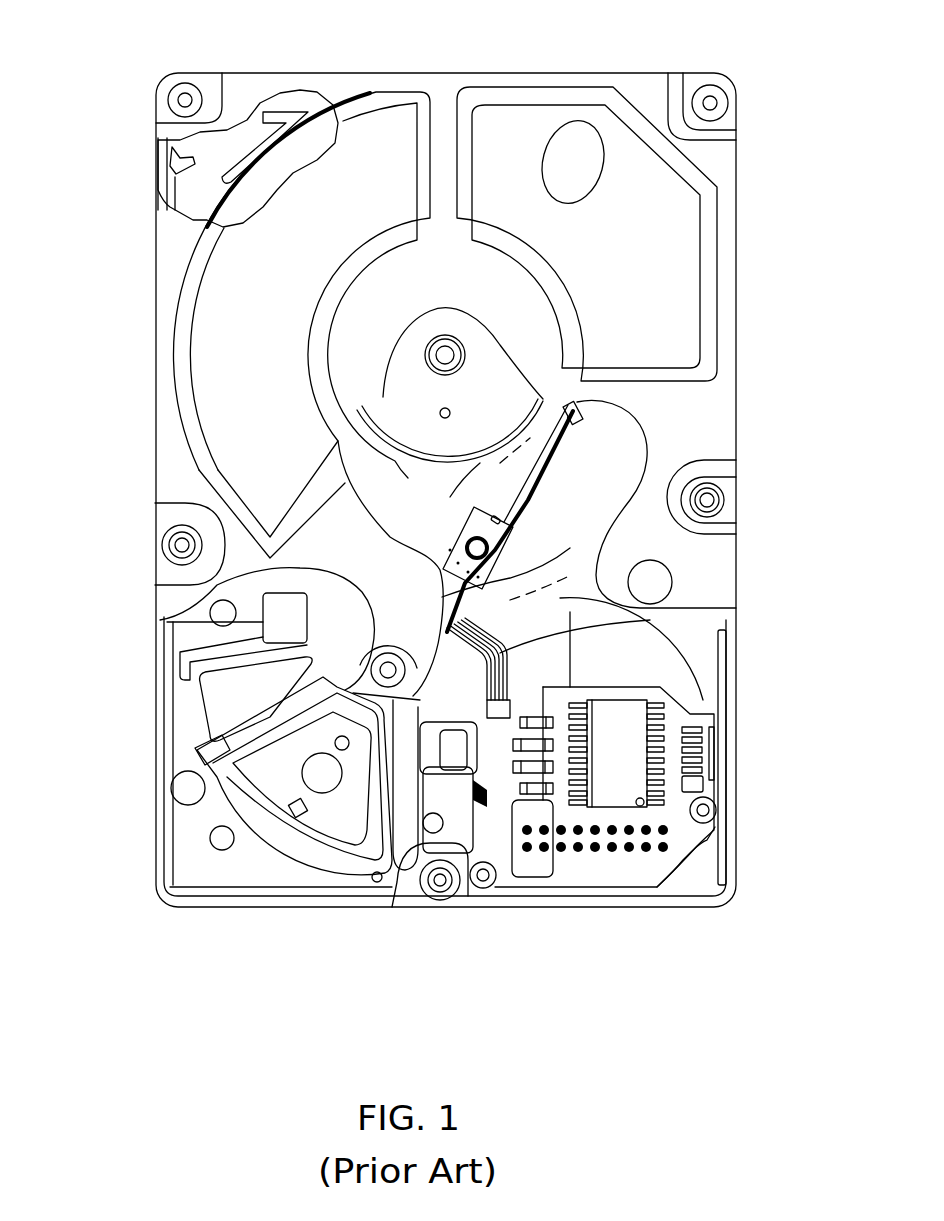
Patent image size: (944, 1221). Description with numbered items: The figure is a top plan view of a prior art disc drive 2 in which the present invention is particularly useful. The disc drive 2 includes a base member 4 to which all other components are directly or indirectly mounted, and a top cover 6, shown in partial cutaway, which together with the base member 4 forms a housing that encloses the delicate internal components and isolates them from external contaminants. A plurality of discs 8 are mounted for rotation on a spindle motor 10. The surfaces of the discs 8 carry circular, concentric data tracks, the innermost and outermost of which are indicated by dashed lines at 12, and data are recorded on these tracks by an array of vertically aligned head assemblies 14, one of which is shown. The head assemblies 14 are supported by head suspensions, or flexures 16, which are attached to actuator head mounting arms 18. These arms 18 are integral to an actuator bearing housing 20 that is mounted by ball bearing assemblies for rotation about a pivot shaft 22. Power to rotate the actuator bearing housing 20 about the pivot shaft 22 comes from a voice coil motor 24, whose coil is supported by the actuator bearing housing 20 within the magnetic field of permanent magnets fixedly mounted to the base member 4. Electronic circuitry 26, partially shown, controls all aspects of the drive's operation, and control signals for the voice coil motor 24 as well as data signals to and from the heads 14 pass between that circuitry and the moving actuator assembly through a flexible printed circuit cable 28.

The disc drive 2 is at (132, 318).
The base member 4 is at (150, 848).
The top cover 6 is at (445, 80).
The discs 8 is at (590, 526).
The spindle motor 10 is at (492, 355).
The data tracks 12 is at (463, 499).
The head assemblies 14 is at (580, 400).
The head suspensions (flexures) 16 is at (527, 483).
The actuator head mounting arms 18 is at (577, 578).
The actuator bearing housing 20 is at (350, 593).
The pivot shaft 22 is at (391, 648).
The voice coil motor (VCM) 24 is at (266, 866).
The electronic circuitry 26 is at (688, 720).
The flexible printed circuit cable (PCC) 28 is at (673, 647).